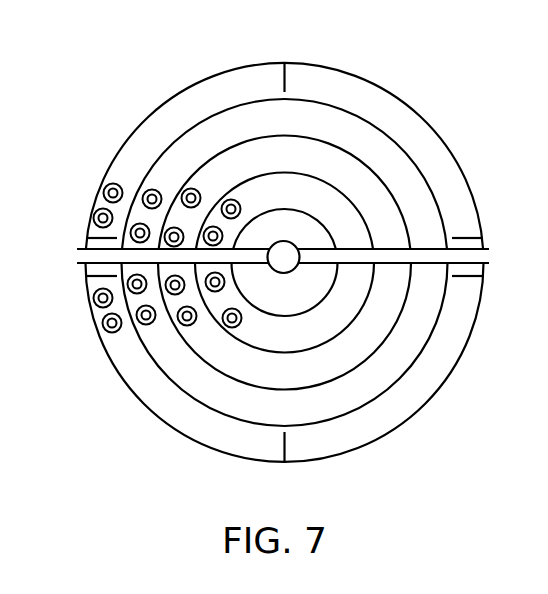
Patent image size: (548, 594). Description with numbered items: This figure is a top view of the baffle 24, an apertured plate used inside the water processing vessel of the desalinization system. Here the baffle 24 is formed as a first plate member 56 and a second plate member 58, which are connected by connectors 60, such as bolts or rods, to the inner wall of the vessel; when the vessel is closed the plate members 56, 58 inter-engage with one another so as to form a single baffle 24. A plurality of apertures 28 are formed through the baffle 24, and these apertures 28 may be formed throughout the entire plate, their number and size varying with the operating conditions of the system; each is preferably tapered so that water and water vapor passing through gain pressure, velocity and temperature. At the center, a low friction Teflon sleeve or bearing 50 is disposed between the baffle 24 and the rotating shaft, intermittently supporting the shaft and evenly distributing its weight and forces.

The baffle 24 is at (289, 263).
The apertures 28 is at (138, 283).
The low friction sleeve or bearing 50 is at (216, 357).
The first plate member 56 is at (304, 359).
The second plate member 58 is at (253, 174).
The connectors 60 is at (300, 78).